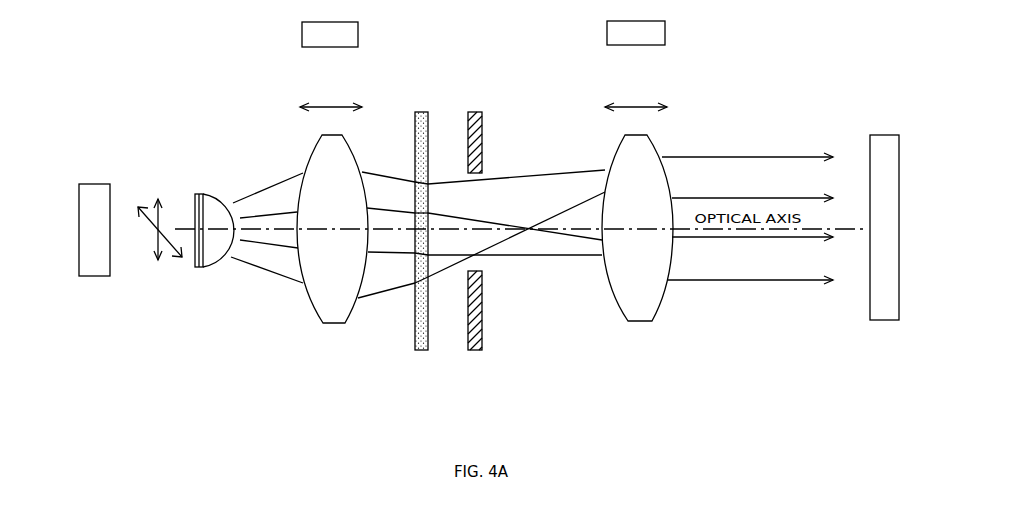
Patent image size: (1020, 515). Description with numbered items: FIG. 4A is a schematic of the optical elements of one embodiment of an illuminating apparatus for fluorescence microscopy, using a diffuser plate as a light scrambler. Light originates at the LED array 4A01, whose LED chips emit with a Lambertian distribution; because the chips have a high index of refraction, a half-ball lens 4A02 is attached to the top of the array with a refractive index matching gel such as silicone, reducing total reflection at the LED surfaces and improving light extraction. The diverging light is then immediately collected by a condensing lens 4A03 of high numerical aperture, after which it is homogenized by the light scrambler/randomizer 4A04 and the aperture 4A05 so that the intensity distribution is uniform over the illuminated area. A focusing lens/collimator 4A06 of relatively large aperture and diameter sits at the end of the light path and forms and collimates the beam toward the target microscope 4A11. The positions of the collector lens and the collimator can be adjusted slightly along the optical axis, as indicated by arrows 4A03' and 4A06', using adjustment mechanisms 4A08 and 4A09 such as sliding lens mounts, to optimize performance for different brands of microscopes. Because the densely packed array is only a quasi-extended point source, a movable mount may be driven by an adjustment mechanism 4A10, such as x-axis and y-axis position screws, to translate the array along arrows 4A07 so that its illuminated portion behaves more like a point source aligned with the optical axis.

The LED array 4A01 is at (150, 266).
The half-ball lens 4A02 is at (186, 189).
The condensing lens 4A03 is at (332, 248).
The arrows 4A03' is at (331, 94).
The light scrambler/randomizer 4A04 is at (423, 248).
The aperture 4A05 is at (477, 248).
The focusing lens/collimator 4A06 is at (637, 246).
The arrows 4A06' is at (636, 94).
The arrows 4A07 is at (155, 219).
The adjustment mechanism 4A08 is at (302, 32).
The adjustment mechanism 4A09 is at (667, 32).
The adjustment mechanism 4A10 is at (70, 230).
The target microscope 4A11 is at (888, 246).